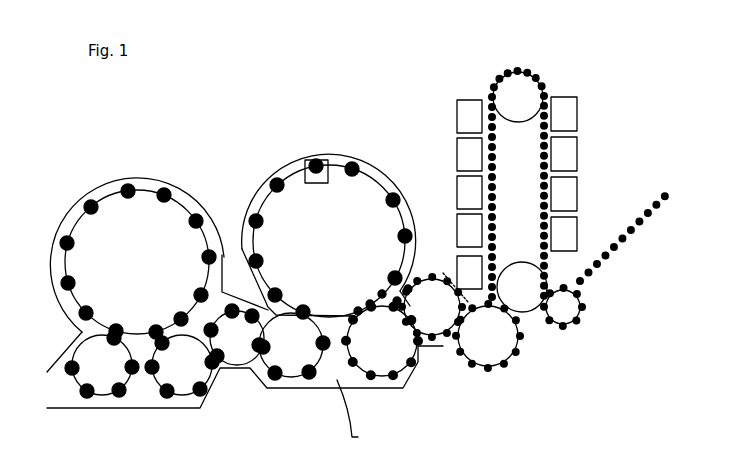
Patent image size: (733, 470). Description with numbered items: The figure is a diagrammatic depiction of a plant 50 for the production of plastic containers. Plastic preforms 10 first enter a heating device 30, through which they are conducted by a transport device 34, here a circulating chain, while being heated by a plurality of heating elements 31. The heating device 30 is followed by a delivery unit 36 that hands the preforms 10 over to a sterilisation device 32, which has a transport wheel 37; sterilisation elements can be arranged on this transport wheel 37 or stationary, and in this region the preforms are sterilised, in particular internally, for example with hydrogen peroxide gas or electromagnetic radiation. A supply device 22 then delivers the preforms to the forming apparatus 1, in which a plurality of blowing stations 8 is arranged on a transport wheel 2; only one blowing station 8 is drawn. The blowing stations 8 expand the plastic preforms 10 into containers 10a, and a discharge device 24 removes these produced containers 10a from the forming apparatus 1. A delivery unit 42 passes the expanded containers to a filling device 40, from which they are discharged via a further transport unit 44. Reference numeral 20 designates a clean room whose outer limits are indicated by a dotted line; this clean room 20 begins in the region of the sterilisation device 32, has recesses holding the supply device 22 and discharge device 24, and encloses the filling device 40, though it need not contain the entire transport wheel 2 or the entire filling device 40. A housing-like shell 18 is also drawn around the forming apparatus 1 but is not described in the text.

The forming apparatus 1 is at (310, 130).
The transport wheel 2 is at (368, 223).
The blowing station 8 is at (324, 160).
The plastic preform 10 is at (588, 272).
The container 10a is at (316, 380).
The housing shell 18 is at (365, 158).
The clean room 20 is at (267, 158).
The supply device 22 is at (395, 350).
The discharge device 24 is at (288, 370).
The heating device 30 is at (475, 66).
The heating element 31 is at (468, 118).
The sterilisation device 32 is at (430, 238).
The transport device 34 is at (518, 88).
The delivery unit 36 is at (480, 348).
The transport wheel 37 is at (430, 325).
The filling device 40 is at (113, 212).
The delivery unit 42 is at (202, 366).
The transport unit 44 is at (88, 375).
The plant 50 is at (251, 73).